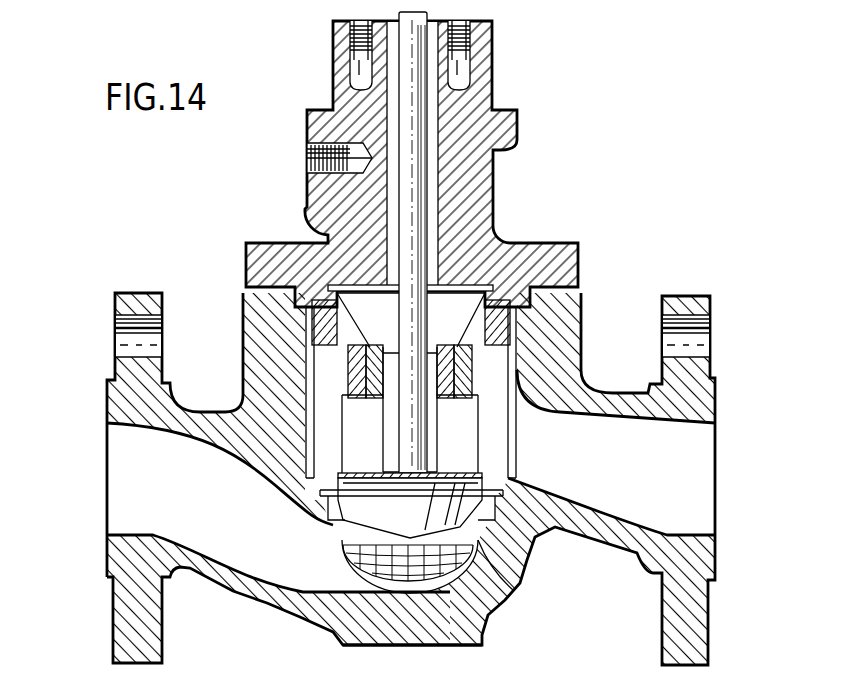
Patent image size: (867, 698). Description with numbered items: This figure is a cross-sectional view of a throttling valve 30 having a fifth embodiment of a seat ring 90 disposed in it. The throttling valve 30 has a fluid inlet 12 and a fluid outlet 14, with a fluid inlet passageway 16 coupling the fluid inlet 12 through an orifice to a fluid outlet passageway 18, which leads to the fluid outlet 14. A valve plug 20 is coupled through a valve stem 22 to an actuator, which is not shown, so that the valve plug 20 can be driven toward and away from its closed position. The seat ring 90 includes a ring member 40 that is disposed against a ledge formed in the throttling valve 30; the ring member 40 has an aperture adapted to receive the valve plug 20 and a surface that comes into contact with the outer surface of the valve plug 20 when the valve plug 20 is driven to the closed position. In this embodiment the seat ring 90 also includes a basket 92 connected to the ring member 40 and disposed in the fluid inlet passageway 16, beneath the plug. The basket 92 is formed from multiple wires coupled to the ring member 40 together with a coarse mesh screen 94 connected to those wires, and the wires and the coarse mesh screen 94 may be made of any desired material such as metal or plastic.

The fluid inlet 12 is at (107, 452).
The fluid outlet 14 is at (715, 443).
The fluid inlet passageway 16 is at (127, 505).
The fluid outlet passageway 18 is at (697, 503).
The valve plug 20 is at (404, 528).
The valve stem 22 is at (497, 232).
The throttling valve 30 is at (573, 99).
The ring member 40 is at (530, 545).
The seat ring 90 is at (322, 543).
The basket 92 is at (513, 590).
The coarse mesh screen 94 is at (480, 648).